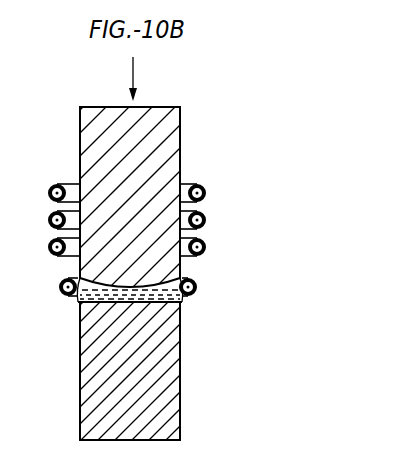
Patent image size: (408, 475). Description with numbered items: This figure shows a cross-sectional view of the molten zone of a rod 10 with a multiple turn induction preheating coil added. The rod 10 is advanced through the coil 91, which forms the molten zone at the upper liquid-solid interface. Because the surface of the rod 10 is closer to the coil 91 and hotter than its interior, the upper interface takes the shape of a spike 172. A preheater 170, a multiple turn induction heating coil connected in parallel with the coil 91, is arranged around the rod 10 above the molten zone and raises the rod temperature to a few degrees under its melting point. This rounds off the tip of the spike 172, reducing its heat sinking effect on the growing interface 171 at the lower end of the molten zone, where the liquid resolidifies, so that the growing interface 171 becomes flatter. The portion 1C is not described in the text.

The rod 10 is at (79, 279).
The lower glass rod 1C is at (80, 372).
The preheater 170 is at (213, 221).
The spike 172 is at (181, 276).
The growing interface 171 is at (183, 303).
The coil 91 is at (61, 289).